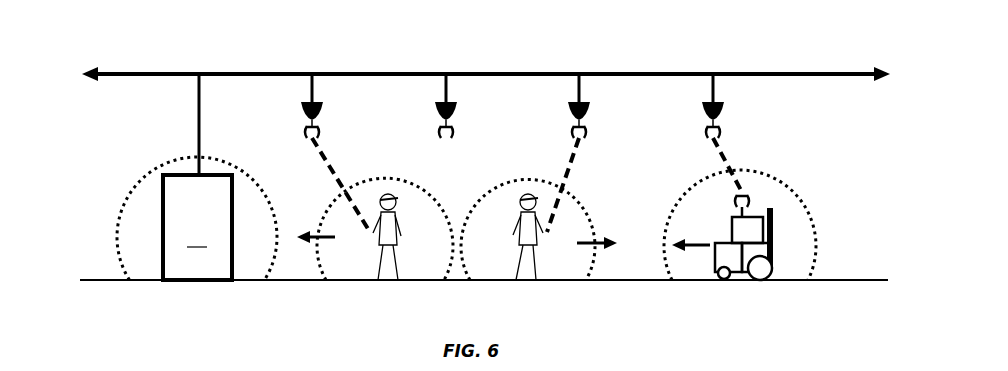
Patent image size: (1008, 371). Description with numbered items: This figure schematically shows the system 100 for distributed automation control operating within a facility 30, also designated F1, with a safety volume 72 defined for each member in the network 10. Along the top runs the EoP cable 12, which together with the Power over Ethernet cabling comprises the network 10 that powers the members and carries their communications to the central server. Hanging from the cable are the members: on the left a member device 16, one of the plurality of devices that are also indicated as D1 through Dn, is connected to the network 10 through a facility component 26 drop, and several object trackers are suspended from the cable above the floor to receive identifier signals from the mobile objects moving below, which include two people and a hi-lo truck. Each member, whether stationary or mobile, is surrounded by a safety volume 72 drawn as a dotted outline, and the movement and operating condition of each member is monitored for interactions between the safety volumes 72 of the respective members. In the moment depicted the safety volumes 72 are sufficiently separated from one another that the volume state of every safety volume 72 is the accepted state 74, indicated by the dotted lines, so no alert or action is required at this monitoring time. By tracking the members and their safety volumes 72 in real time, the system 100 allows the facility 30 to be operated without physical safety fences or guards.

The network 10 is at (148, 37).
The EoP cable 12 is at (347, 73).
The facility 30 is at (107, 150).
The facility component 26 is at (165, 218).
The device Dn is at (165, 243).
The member device 16 is at (138, 182).
The safety volume 72 is at (506, 211).
The accepted state 74 is at (222, 160).
The system 100 is at (867, 152).